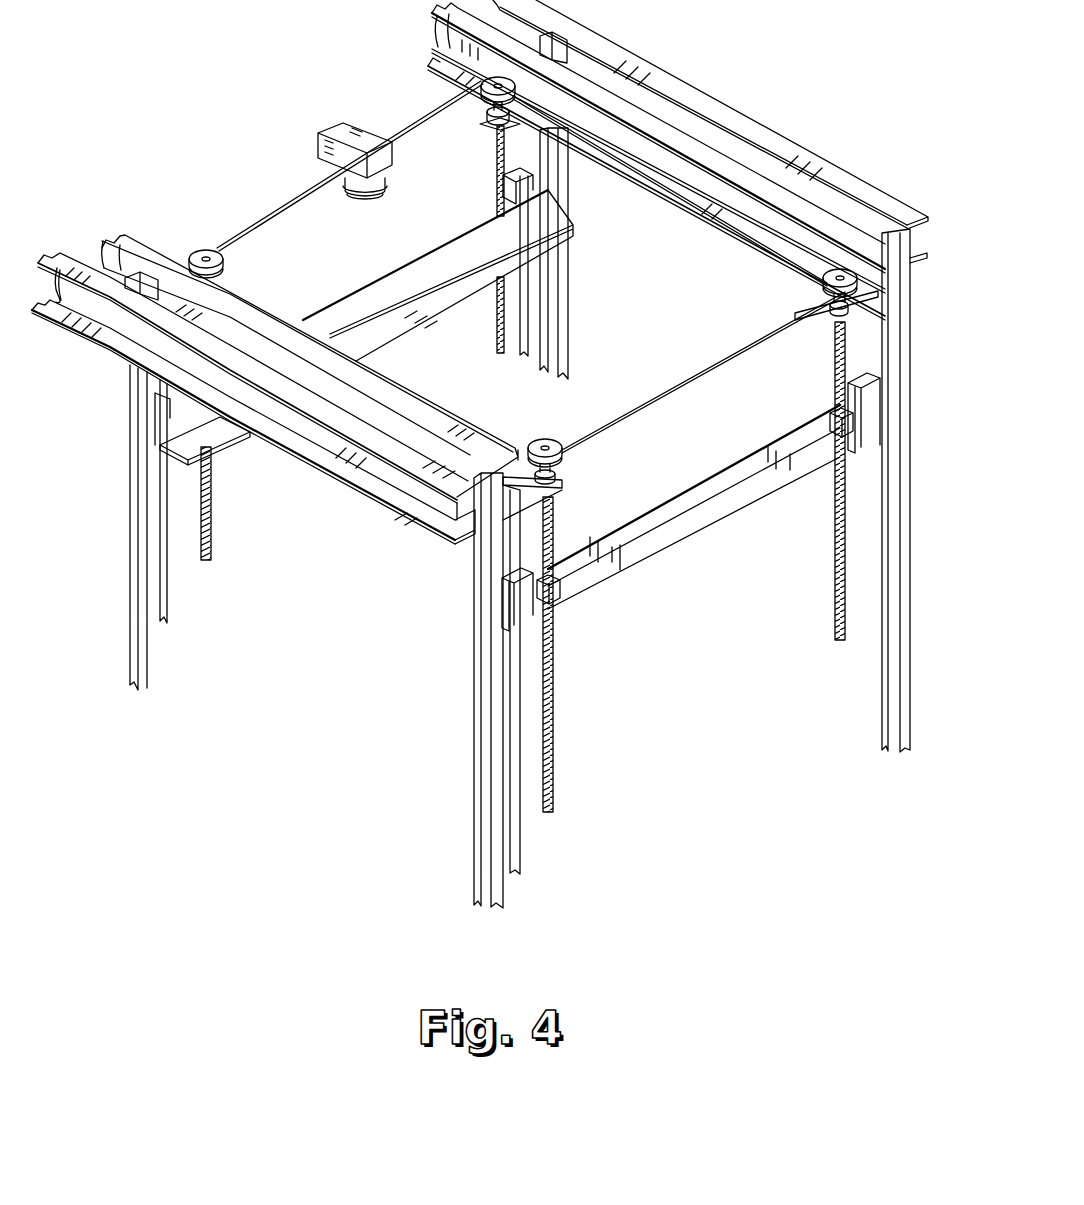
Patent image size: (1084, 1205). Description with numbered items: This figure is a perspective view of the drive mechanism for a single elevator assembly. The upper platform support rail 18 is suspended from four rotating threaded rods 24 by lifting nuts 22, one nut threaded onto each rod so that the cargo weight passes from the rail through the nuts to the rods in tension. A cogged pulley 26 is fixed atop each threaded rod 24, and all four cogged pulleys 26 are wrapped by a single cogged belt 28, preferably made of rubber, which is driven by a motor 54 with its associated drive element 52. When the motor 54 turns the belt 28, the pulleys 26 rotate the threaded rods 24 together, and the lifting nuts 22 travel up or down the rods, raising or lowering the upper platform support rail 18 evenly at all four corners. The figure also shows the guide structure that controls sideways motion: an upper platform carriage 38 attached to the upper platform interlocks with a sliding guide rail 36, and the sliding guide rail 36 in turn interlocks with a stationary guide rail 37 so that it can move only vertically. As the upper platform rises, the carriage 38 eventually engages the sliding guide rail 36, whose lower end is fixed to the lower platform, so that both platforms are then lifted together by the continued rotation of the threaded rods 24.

The upper platform support rail 18 is at (700, 484).
The lifting nut 22 is at (557, 597).
The threaded rod 24 is at (493, 186).
The cogged pulley 26 is at (546, 437).
The cogged belt 28 is at (722, 356).
The sliding guide rail 36 is at (870, 650).
The stationary guide rail 37 is at (893, 386).
The upper platform carriage 38 is at (860, 415).
The camera lens 52 is at (359, 186).
The motor 54 is at (336, 126).